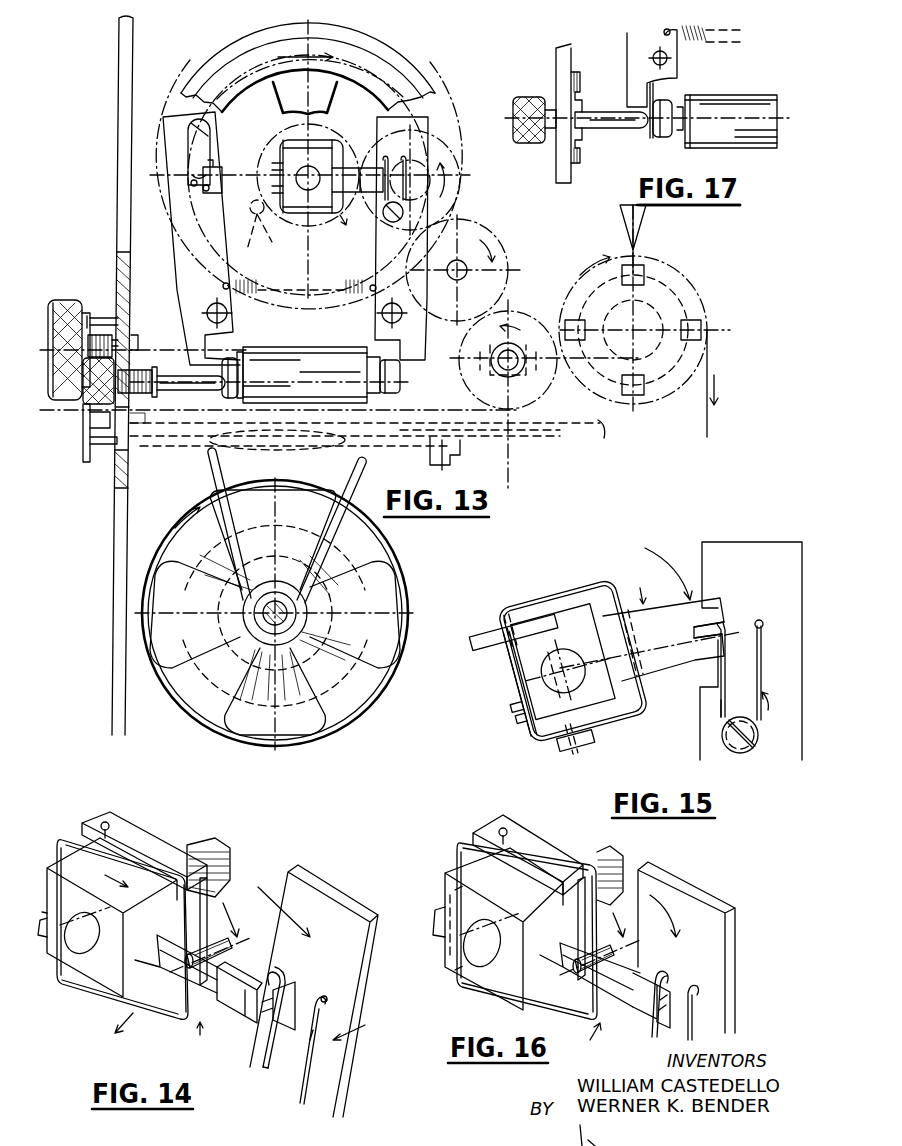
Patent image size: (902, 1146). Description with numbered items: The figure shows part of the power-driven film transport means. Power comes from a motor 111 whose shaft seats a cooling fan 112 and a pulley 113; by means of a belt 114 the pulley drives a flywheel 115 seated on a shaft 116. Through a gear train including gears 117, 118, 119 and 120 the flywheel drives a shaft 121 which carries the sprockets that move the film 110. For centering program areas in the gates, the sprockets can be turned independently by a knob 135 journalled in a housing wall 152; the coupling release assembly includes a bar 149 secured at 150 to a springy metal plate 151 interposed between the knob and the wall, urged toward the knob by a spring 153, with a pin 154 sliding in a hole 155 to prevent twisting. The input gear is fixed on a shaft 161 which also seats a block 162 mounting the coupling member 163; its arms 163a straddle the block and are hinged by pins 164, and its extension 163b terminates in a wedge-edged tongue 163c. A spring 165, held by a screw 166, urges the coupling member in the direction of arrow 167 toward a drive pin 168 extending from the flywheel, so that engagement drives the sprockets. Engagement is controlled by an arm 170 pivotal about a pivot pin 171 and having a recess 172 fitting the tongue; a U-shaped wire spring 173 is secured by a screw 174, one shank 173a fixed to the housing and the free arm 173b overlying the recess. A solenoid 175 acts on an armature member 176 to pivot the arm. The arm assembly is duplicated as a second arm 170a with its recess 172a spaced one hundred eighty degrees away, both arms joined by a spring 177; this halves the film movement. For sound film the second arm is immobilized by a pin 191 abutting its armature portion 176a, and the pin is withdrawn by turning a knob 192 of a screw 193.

In FIG. 13, the film 110 is at (708, 341).
In FIG. 13, the motor 111 is at (358, 695).
In FIG. 13, the cooling fan 112 is at (393, 596).
In FIG. 13, the pulley 113 is at (252, 622).
In FIG. 13, the belt 114 is at (212, 470).
In FIG. 13, the flywheel 115 is at (385, 70).
In FIG. 13, the shaft 116 is at (300, 606).
In FIG. 13, the gear 117 is at (275, 140).
In FIG. 13, the gear 118 is at (436, 136).
In FIG. 13, the gear 119 is at (490, 235).
In FIG. 13, the gear 120 is at (515, 312).
In FIG. 13, the shaft 121 is at (522, 370).
In FIG. 13, the knob 135 is at (68, 300).
In FIG. 13, the bar 149 is at (105, 448).
In FIG. 13, the securing point 150 is at (90, 445).
In FIG. 13, the metal plate 151 is at (82, 432).
In FIG. 13, the housing wall 152 is at (118, 145).
In FIG. 17, the housing wall 152 is at (563, 72).
In FIG. 13, the spring 153 is at (97, 335).
In FIG. 13, the pin 154 is at (130, 316).
In FIG. 13, the hole 155 is at (136, 325).
In FIG. 13, the shaft 161 is at (312, 166).
In FIG. 15, the shaft 161 is at (545, 680).
In FIG. 14, the shaft 161 is at (215, 840).
In FIG. 16, the shaft 161 is at (470, 968).
In FIG. 13, the block 162 is at (307, 162).
In FIG. 15, the block 162 is at (578, 620).
In FIG. 14, the block 162 is at (107, 983).
In FIG. 16, the block 162 is at (470, 875).
In FIG. 13, the coupling member 163 is at (340, 225).
In FIG. 15, the coupling member 163 is at (650, 614).
In FIG. 14, the coupling member 163 is at (187, 985).
In FIG. 16, the coupling member 163 is at (590, 985).
In FIG. 15, the arms 163a is at (530, 610).
In FIG. 14, the arms 163a is at (135, 835).
In FIG. 16, the arms 163a is at (548, 850).
In FIG. 15, the arm extension 163b is at (668, 665).
In FIG. 14, the arm extension 163b is at (200, 1007).
In FIG. 16, the arm extension 163b is at (633, 1005).
In FIG. 15, the tongue 163c is at (707, 618).
In FIG. 14, the tongue 163c is at (245, 1012).
In FIG. 16, the tongue 163c is at (672, 990).
In FIG. 15, the pins 164 is at (530, 740).
In FIG. 14, the pins 164 is at (110, 822).
In FIG. 16, the pins 164 is at (508, 830).
In FIG. 15, the spring 165 is at (612, 722).
In FIG. 14, the spring 165 is at (57, 845).
In FIG. 16, the spring 165 is at (460, 842).
In FIG. 15, the screw 166 is at (500, 680).
In FIG. 14, the screw 166 is at (42, 938).
In FIG. 16, the screw 166 is at (433, 920).
In FIG. 14, the arrow 167 is at (105, 875).
In FIG. 13, the drive pin 168 is at (258, 215).
In FIG. 14, the drive pin 168 is at (232, 952).
In FIG. 16, the drive pin 168 is at (575, 960).
In FIG. 13, the arm 170 is at (430, 115).
In FIG. 15, the arm 170 is at (725, 555).
In FIG. 14, the arm 170 is at (315, 898).
In FIG. 16, the arm 170 is at (698, 905).
In FIG. 13, the second arm 170a is at (178, 118).
In FIG. 17, the second arm 170a is at (630, 60).
In FIG. 13, the pivot pin 171 is at (382, 313).
In FIG. 15, the recess 172 is at (728, 640).
In FIG. 14, the recess 172 is at (288, 1003).
In FIG. 16, the recess 172 is at (655, 1030).
In FIG. 13, the recess 172a is at (212, 176).
In FIG. 15, the wire spring 173 is at (779, 683).
In FIG. 14, the wire spring 173 is at (351, 1050).
In FIG. 15, the spring shank 173a is at (762, 660).
In FIG. 14, the spring shank 173a is at (312, 1044).
In FIG. 16, the spring shank 173a is at (700, 1010).
In FIG. 15, the free arm 173b is at (721, 712).
In FIG. 14, the free arm 173b is at (272, 1070).
In FIG. 13, the screw 174 is at (393, 212).
In FIG. 15, the screw 174 is at (752, 745).
In FIG. 13, the solenoid 175 is at (255, 352).
In FIG. 17, the solenoid 175 is at (722, 100).
In FIG. 13, the armature member 176 is at (400, 378).
In FIG. 13, the armature portion 176a is at (228, 398).
In FIG. 17, the armature portion 176a is at (657, 137).
In FIG. 13, the spring 177 is at (270, 292).
In FIG. 17, the spring 177 is at (704, 40).
In FIG. 13, the pin 191 is at (174, 390).
In FIG. 17, the pin 191 is at (617, 128).
In FIG. 13, the knob 192 is at (83, 402).
In FIG. 17, the knob 192 is at (524, 142).
In FIG. 13, the screw 193 is at (150, 370).
In FIG. 17, the screw 193 is at (555, 130).